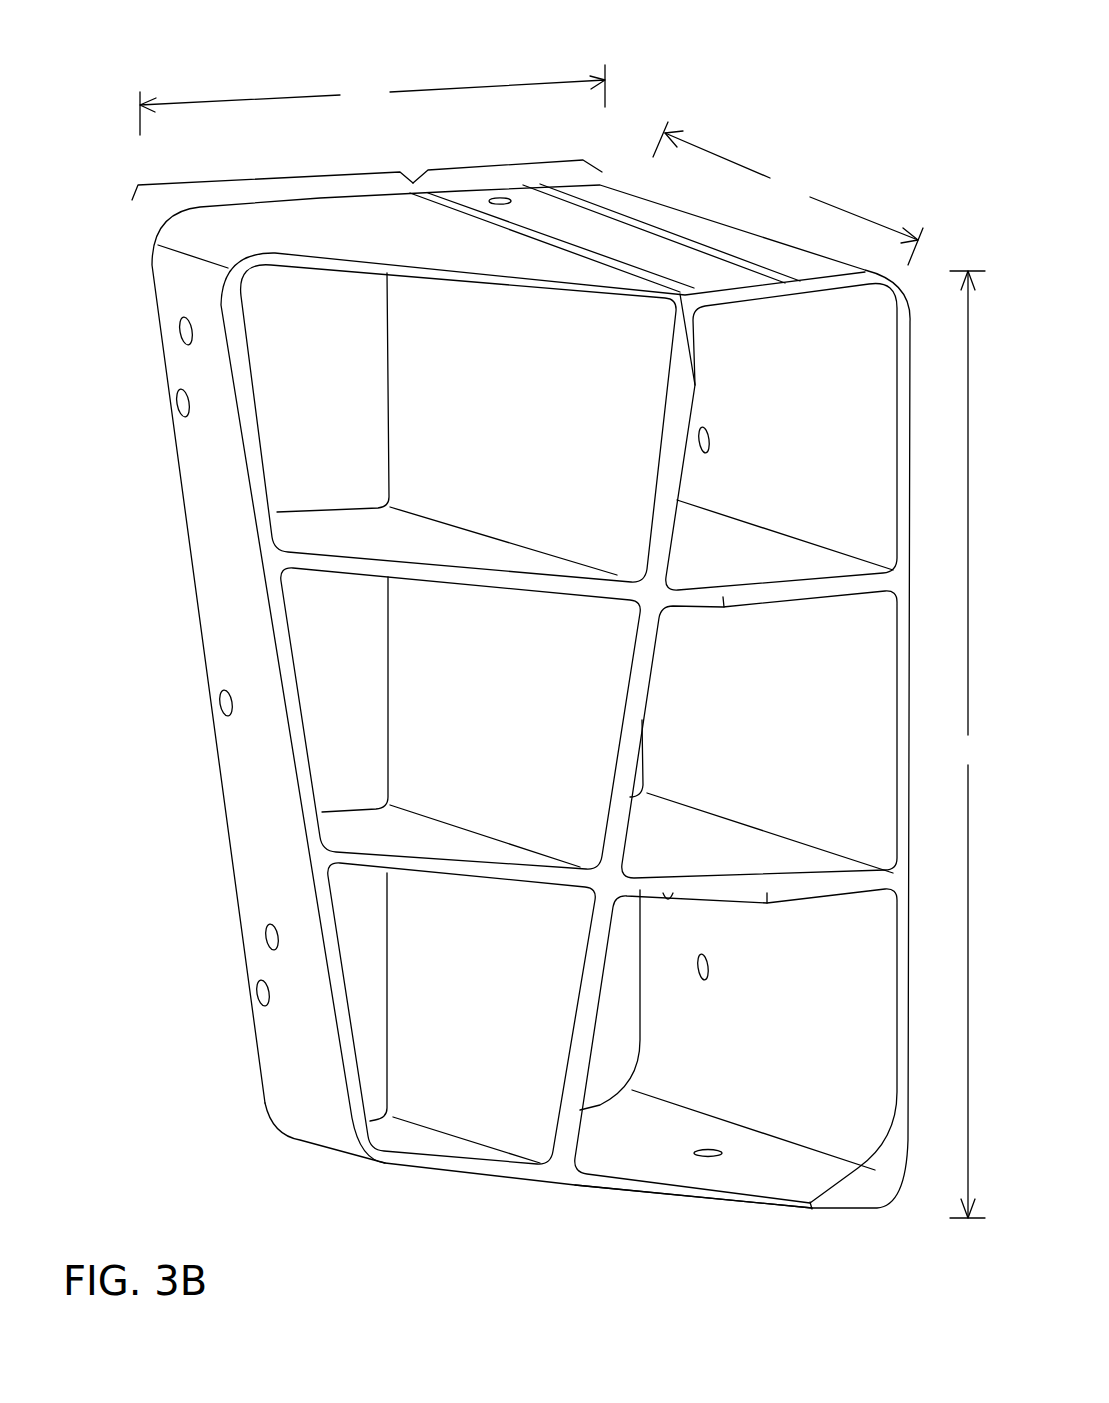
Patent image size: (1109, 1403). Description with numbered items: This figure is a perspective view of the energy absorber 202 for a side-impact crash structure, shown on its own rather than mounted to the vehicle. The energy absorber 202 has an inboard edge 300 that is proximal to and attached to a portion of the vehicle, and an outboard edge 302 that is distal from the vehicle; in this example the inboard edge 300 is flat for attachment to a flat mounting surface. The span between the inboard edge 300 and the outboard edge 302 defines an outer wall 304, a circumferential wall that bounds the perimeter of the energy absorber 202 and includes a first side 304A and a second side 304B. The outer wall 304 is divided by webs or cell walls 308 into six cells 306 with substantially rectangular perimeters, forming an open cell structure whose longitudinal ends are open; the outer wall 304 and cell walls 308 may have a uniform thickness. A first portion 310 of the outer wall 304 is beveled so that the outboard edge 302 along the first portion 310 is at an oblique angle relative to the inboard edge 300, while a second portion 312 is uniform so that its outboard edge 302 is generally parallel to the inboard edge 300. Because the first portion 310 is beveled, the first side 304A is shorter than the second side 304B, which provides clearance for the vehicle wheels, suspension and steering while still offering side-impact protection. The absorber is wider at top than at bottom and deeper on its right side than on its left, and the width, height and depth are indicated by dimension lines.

The energy absorber 202 is at (150, 58).
The inboard edge 300 is at (168, 405).
The outboard edge 302 is at (872, 1192).
The outer wall 304 is at (434, 244).
The first side 304A is at (252, 645).
The second side 304B is at (849, 1011).
The cell 306 is at (408, 1084).
The cell wall 308 is at (565, 1125).
The first portion 310 is at (250, 178).
The second portion 312 is at (482, 163).